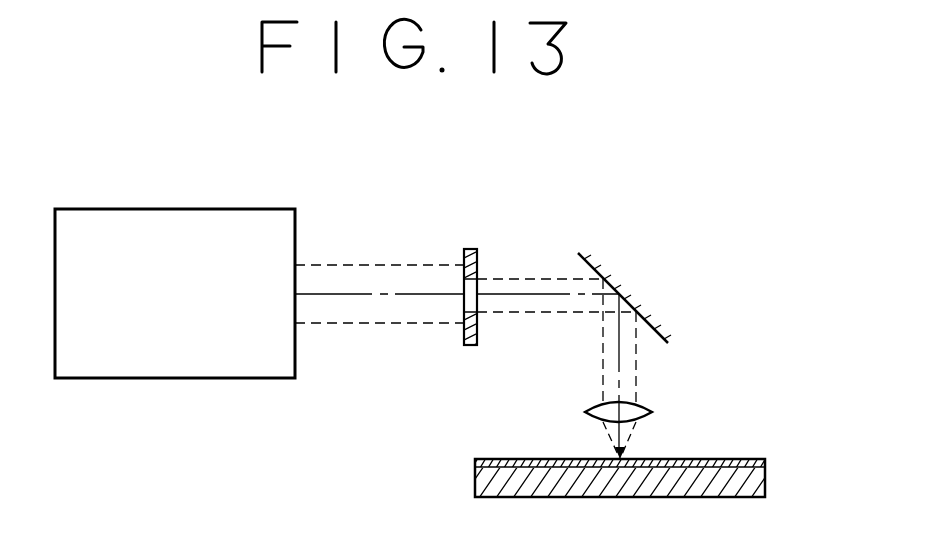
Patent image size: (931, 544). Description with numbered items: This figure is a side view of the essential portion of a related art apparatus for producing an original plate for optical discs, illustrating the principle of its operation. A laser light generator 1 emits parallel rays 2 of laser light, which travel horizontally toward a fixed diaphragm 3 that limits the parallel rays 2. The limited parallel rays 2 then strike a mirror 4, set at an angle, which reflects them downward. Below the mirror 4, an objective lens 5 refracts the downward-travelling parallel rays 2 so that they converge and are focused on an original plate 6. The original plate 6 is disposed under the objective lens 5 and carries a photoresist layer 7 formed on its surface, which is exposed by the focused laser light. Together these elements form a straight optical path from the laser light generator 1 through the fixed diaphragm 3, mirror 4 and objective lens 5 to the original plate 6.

The laser light generator 1 is at (249, 210).
The parallel rays 2 is at (362, 325).
The fixed diaphragm 3 is at (476, 262).
The mirror 4 is at (647, 302).
The objective lens 5 is at (643, 405).
The original plate 6 is at (768, 476).
The photoresist layer 7 is at (726, 458).